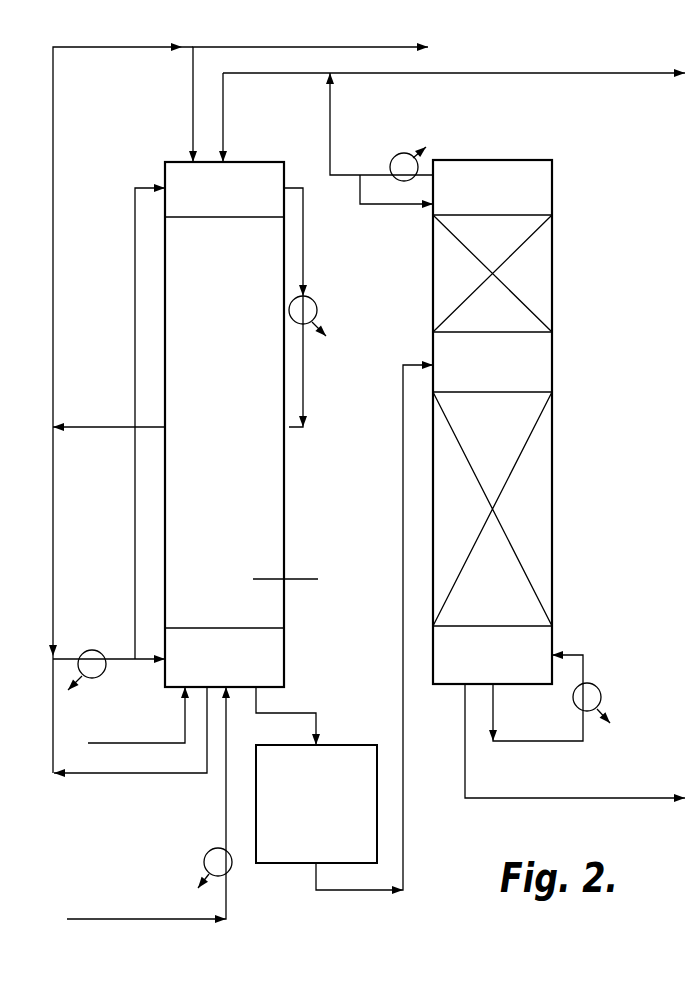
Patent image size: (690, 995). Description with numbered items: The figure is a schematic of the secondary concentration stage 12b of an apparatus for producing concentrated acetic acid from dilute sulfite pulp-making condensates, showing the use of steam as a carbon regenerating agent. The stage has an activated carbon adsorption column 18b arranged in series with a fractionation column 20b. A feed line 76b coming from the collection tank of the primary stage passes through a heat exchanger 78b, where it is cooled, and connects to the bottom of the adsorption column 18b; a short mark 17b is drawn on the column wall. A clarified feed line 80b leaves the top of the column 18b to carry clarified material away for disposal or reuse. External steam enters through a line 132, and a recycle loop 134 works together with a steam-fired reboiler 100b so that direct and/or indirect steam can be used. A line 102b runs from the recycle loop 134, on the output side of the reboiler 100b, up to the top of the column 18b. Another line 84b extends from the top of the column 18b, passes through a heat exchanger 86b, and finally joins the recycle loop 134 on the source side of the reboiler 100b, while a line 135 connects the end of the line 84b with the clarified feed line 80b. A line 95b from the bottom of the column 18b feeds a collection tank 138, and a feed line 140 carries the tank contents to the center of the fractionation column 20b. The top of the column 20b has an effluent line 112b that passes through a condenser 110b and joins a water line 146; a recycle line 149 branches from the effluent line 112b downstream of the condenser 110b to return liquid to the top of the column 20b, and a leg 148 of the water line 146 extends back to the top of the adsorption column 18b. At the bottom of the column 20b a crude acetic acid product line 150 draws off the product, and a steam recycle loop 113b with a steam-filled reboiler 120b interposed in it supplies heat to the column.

The secondary concentration stage 12b is at (544, 400).
The carbon bed level 17b is at (300, 579).
The activated carbon adsorption column 18b is at (284, 162).
The fractionation column 20b is at (552, 210).
The feed line 76b is at (118, 919).
The heat exchanger 78b is at (232, 866).
The clarified feed line 80b is at (342, 48).
The line 84b is at (303, 222).
The heat exchanger 86b is at (317, 305).
The line 95b is at (285, 713).
The steam-fired reboiler 100b is at (95, 651).
The line 102b is at (135, 497).
The condenser 110b is at (417, 152).
The effluent line 112b is at (350, 168).
The steam recycle loop 113b is at (525, 741).
The steam-filled reboiler 120b is at (601, 697).
The line 132 is at (123, 745).
The recycle loop 134 is at (100, 775).
The line 135 is at (53, 262).
The collection tank 138 is at (330, 745).
The feed line 140 is at (403, 773).
The water line 146 is at (515, 73).
The leg 148 is at (223, 100).
The recycle line 149 is at (381, 205).
The crude acetic acid product line 150 is at (525, 798).